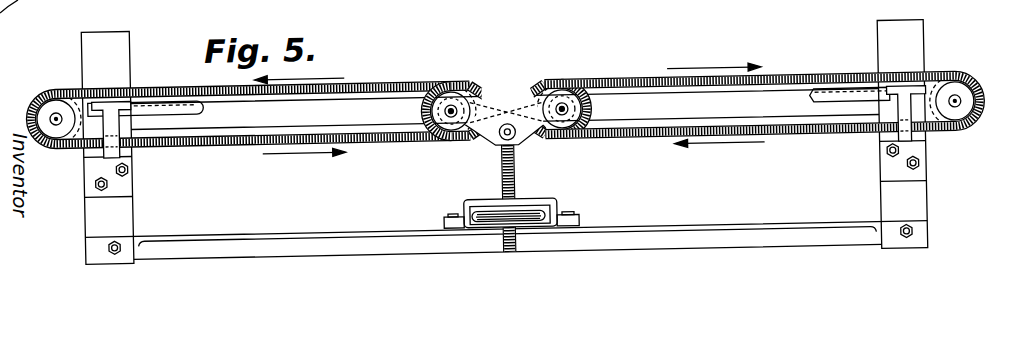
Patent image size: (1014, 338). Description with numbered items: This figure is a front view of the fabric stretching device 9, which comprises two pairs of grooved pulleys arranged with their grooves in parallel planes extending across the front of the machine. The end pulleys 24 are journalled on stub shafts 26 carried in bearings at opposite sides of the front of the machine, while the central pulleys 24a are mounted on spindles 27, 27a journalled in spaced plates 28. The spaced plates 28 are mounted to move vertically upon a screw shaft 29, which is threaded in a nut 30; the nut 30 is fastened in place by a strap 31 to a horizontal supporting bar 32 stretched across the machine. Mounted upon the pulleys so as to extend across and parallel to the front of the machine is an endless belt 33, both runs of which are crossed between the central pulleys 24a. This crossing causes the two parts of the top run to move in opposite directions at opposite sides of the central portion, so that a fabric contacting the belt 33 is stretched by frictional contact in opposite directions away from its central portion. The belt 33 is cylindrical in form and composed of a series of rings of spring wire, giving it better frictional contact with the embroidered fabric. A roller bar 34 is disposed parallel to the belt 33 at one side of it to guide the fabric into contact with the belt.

The fabric stretching device 9 is at (250, 103).
The end pulleys 24 is at (48, 92).
The central pulleys 24a is at (466, 99).
The stub shafts 26 is at (55, 126).
The spindle 27 is at (440, 146).
The spindle 27a is at (581, 141).
The spaced plates 28 is at (493, 150).
The screw shaft 29 is at (514, 160).
The nut 30 is at (522, 216).
The strap 31 is at (556, 218).
The horizontal supporting bar 32 is at (643, 240).
The endless belt 33 is at (794, 92).
The roller bar 34 is at (178, 118).